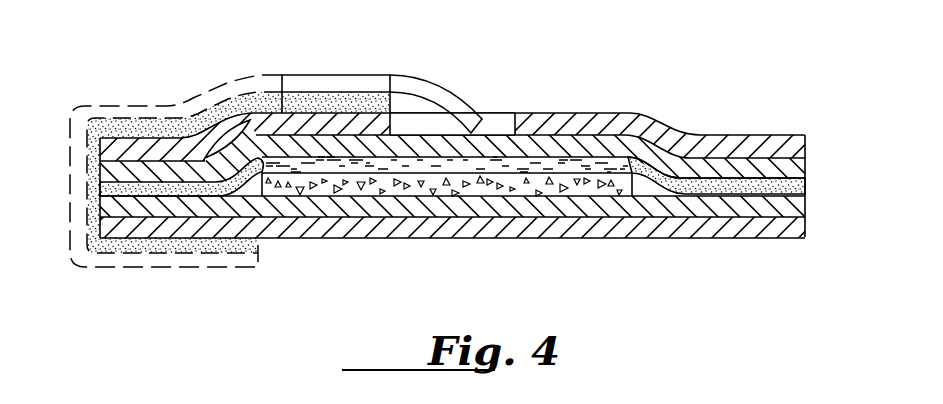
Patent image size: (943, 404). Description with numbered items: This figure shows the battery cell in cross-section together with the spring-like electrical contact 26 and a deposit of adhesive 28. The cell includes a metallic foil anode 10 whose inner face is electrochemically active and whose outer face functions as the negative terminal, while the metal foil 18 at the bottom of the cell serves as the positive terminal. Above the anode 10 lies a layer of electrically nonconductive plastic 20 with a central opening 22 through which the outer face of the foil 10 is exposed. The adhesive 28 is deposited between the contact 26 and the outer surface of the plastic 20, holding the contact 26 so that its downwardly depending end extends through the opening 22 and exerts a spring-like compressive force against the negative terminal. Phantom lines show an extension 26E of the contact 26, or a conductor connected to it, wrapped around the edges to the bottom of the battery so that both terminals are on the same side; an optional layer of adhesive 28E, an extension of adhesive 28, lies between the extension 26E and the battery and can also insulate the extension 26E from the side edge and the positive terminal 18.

The metallic foil anode 10 is at (777, 170).
The metal foil 18 is at (523, 238).
The layer of electrically nonconductive plastic 20 is at (665, 120).
The opening 22 is at (502, 122).
The spring-like electrical contact 26 is at (436, 88).
The extension of contact 26E is at (143, 115).
The deposit of adhesive 28 is at (345, 97).
The layer of adhesive 28E is at (232, 110).